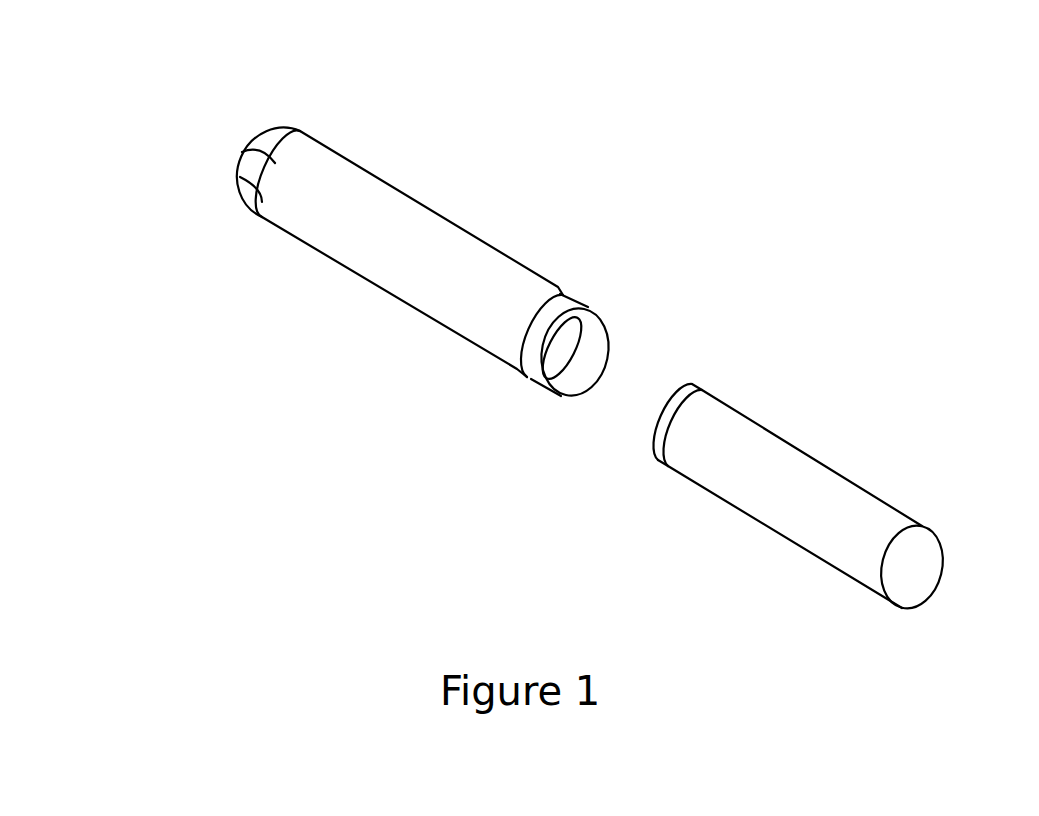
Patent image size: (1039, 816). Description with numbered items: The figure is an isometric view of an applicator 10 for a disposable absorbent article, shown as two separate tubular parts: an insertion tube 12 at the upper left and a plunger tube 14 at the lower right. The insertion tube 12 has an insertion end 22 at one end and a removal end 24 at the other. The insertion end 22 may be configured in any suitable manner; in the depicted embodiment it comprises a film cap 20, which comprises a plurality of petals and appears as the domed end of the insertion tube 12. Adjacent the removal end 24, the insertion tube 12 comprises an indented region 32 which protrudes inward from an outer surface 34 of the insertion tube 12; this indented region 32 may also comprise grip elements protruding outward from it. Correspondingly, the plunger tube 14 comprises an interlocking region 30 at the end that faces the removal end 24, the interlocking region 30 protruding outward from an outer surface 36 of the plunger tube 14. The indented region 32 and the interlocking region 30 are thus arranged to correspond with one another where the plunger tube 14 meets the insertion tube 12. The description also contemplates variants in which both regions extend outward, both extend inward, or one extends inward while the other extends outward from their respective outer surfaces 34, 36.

The applicator 10 is at (768, 246).
The insertion tube 12 is at (360, 207).
The plunger tube 14 is at (787, 452).
The film cap 20 is at (265, 140).
The insertion end 22 is at (244, 133).
The removal end 24 is at (573, 373).
The interlocking region 30 is at (645, 450).
The indented region 32 is at (511, 330).
The outer surface of the insertion tube 34 is at (485, 272).
The outer surface of the plunger tube 36 is at (868, 513).